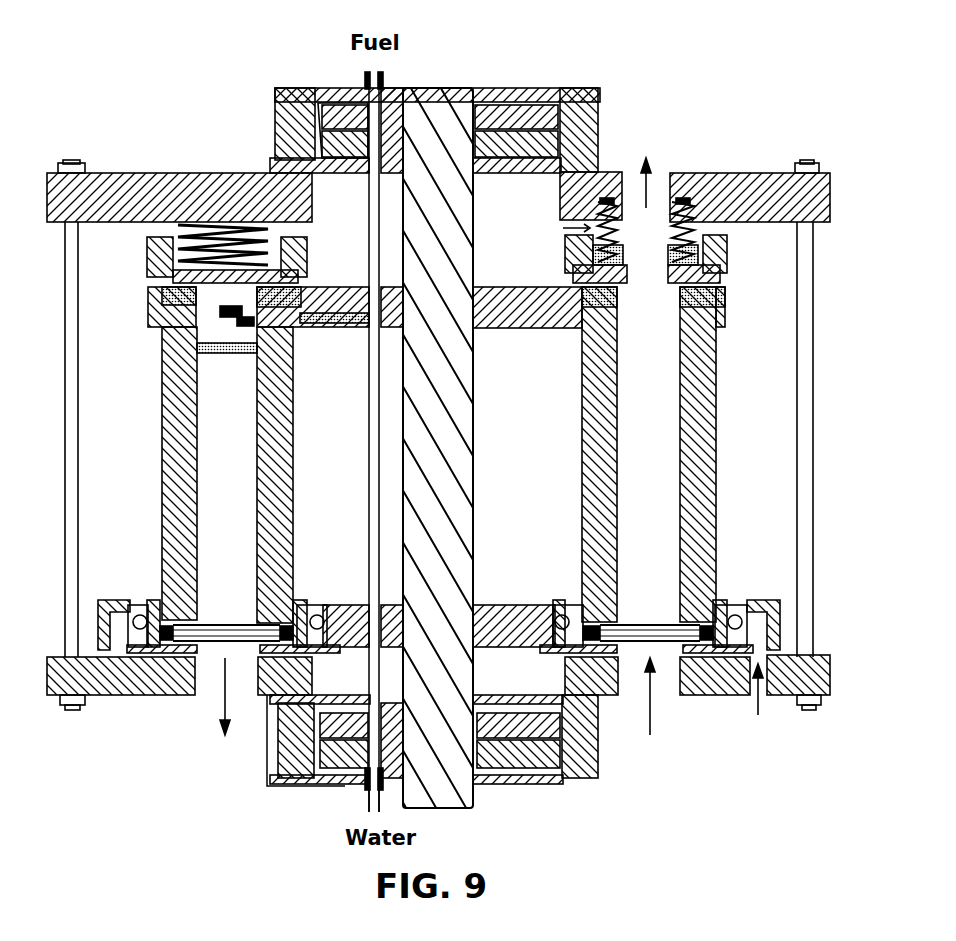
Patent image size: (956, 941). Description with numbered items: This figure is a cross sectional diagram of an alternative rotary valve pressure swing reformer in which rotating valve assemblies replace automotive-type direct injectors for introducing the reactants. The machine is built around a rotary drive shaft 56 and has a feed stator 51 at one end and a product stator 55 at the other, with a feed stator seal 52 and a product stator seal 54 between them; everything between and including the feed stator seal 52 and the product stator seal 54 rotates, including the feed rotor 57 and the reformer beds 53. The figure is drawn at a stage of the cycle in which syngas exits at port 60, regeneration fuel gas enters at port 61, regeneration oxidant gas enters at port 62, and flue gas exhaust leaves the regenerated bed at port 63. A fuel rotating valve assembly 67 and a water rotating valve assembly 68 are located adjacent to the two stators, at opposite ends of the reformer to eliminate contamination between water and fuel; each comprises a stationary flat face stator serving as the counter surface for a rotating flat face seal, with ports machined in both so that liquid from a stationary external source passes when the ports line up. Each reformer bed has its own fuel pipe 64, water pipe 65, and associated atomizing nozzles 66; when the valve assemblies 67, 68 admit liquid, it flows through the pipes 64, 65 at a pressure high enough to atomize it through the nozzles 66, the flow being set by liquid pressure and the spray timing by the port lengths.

The feed stator 51 is at (145, 173).
The feed stator seal 52 is at (147, 250).
The reformer beds 53 is at (297, 463).
The product stator seal 54 is at (512, 604).
The product stator 55 is at (123, 696).
The rotary drive shaft 56 is at (428, 88).
The feed rotor 57 is at (542, 328).
The port 60 is at (223, 695).
The port 61 is at (756, 702).
The port 62 is at (650, 705).
The port 63 is at (647, 184).
The fuel pipe 64 is at (367, 251).
The water pipe 65 is at (366, 678).
The atomizing nozzles 66 is at (240, 322).
The fuel rotating valve assembly 67 is at (275, 137).
The water rotating valve assembly 68 is at (520, 781).